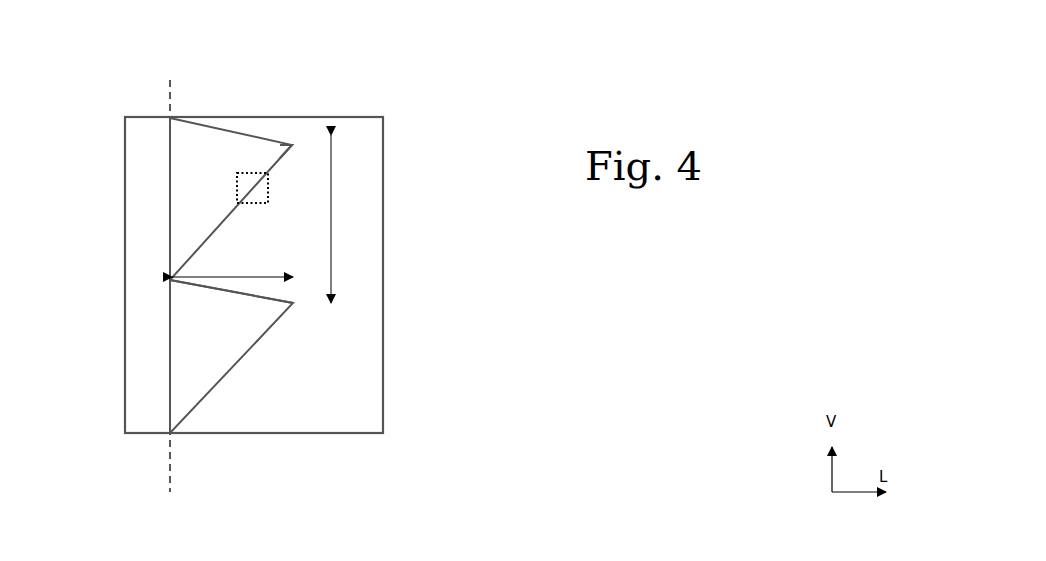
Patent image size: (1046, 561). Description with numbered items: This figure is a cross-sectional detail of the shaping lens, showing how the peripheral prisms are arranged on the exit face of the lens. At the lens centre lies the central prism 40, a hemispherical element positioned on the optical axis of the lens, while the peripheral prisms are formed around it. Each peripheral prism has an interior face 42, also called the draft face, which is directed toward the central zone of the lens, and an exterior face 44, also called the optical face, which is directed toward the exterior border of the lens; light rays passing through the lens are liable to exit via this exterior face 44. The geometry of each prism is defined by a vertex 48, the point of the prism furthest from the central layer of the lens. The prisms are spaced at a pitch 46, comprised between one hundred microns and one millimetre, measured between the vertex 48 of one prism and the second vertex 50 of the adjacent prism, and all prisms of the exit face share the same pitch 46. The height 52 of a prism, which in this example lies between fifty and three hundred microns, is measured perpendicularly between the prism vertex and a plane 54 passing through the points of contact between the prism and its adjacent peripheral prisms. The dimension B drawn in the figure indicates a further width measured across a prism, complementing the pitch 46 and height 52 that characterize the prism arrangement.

The central prism 40 is at (190, 384).
The interior face 42 is at (238, 116).
The exterior face 44 is at (280, 230).
The pitch 46 is at (331, 165).
The vertex 48 is at (294, 144).
The second vertex 50 is at (297, 303).
The height 52 is at (207, 279).
The plane 54 is at (163, 382).
The width dimension B is at (225, 222).